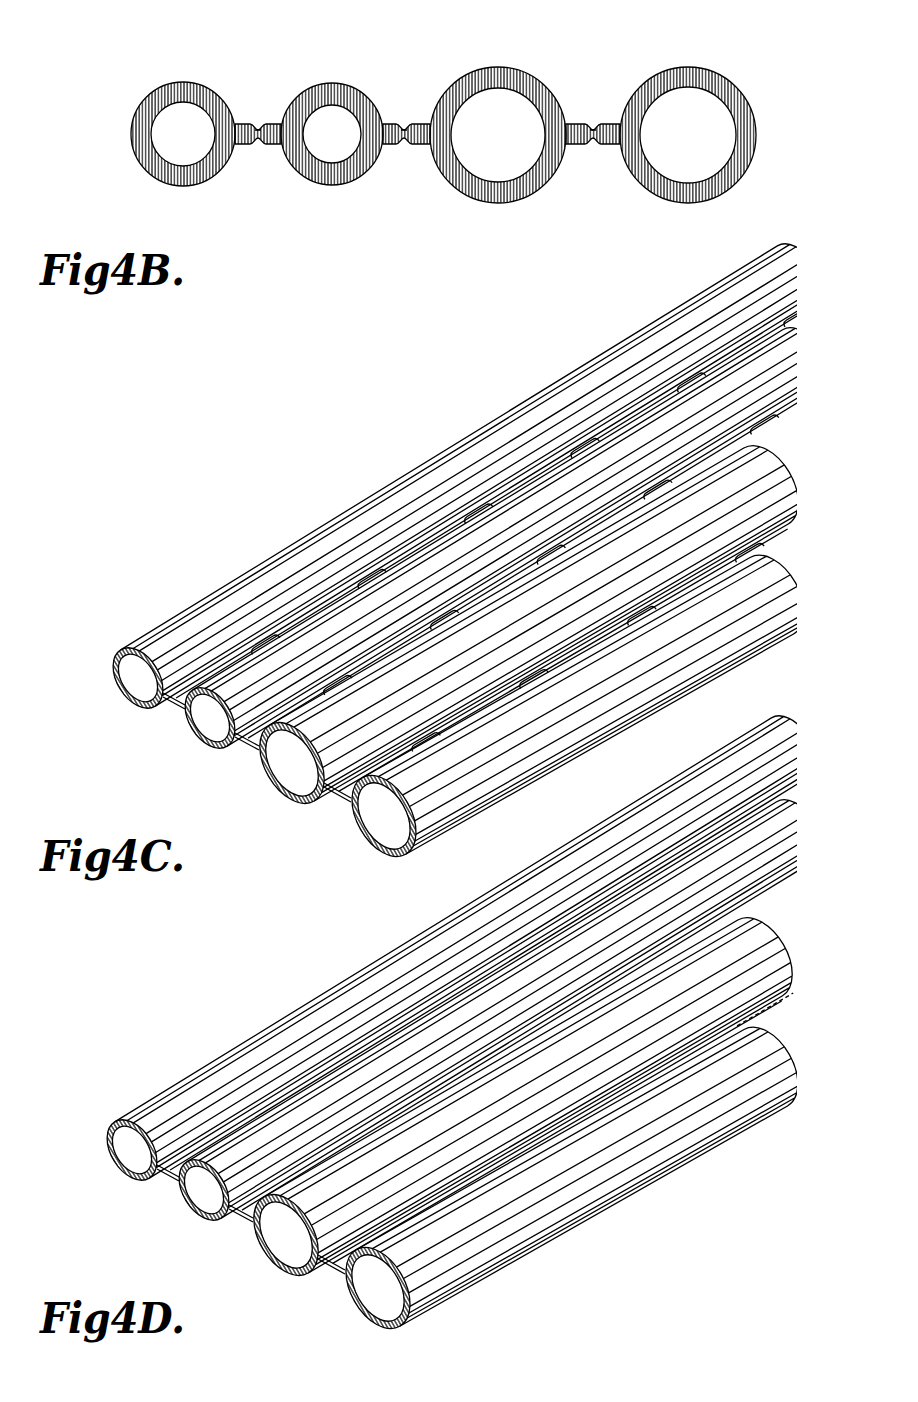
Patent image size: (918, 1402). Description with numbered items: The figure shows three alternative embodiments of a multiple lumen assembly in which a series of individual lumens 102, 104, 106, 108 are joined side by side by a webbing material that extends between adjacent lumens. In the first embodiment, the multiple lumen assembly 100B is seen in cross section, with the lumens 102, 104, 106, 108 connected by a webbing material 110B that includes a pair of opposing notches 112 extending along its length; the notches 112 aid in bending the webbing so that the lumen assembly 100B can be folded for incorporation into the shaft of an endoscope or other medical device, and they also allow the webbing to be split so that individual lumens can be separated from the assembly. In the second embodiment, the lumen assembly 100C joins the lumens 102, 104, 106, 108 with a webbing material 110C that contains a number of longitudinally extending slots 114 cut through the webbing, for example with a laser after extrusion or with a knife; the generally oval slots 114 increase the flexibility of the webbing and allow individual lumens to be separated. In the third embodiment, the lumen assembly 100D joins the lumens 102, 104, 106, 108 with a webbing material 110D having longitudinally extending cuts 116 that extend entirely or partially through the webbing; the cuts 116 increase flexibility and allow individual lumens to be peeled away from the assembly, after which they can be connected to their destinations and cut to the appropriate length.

In FIG. 4B, the multiple lumen assembly 100B is at (122, 59).
In FIG. 4C, the lumen assembly 100C is at (270, 530).
In FIG. 4D, the lumen assembly 100D is at (264, 1002).
In FIG. 4B, the lumen 102 is at (688, 67).
In FIG. 4C, the lumen 102 is at (374, 843).
In FIG. 4D, the lumen 102 is at (368, 1316).
In FIG. 4B, the lumen 104 is at (498, 67).
In FIG. 4C, the lumen 104 is at (293, 806).
In FIG. 4D, the lumen 104 is at (285, 1278).
In FIG. 4B, the lumen 106 is at (333, 83).
In FIG. 4C, the lumen 106 is at (203, 747).
In FIG. 4D, the lumen 106 is at (195, 1208).
In FIG. 4B, the lumen 108 is at (184, 82).
In FIG. 4C, the lumen 108 is at (123, 699).
In FIG. 4D, the lumen 108 is at (118, 1170).
In FIG. 4B, the webbing material 110B is at (262, 146).
In FIG. 4C, the webbing material 110C is at (167, 702).
In FIG. 4D, the webbing material 110D is at (160, 1174).
In FIG. 4B, the notches 112 is at (259, 119).
In FIG. 4C, the slots 114 is at (222, 668).
In FIG. 4D, the cuts 116 is at (170, 1158).